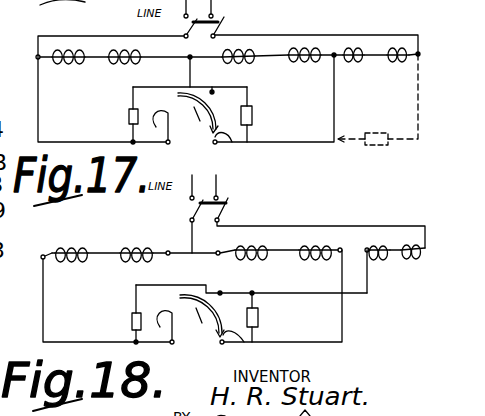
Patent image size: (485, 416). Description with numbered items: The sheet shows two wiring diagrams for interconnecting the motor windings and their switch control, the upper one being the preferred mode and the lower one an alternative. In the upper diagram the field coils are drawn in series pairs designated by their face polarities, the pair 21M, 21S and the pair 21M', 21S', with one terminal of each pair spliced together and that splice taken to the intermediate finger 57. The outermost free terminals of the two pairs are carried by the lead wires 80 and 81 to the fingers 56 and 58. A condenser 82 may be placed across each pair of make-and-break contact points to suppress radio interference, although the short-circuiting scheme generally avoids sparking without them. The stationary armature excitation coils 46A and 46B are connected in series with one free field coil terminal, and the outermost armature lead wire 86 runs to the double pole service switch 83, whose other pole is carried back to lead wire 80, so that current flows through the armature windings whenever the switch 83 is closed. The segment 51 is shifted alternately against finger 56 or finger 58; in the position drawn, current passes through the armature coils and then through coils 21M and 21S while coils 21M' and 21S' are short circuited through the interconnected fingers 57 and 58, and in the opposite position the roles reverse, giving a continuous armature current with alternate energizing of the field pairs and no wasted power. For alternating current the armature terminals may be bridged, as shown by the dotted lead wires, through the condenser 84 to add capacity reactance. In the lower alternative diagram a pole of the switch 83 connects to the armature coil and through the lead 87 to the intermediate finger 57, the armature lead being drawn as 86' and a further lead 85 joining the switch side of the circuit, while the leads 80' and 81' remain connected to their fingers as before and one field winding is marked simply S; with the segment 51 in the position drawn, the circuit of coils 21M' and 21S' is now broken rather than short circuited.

In FIG. 17, the double pole service switch 83 is at (224, 28).
In FIG. 18, the double pole service switch 83 is at (229, 206).
In FIG. 17, the lead wire 80 is at (110, 89).
In FIG. 17, the outermost armature lead wire 86 is at (316, 32).
In FIG. 17, the field coil 21M is at (68, 66).
In FIG. 18, the field coil 21M is at (249, 261).
In FIG. 17, the field coil 21S is at (124, 67).
In FIG. 17, the field coil 21M' is at (237, 66).
In FIG. 18, the field coil 21M' is at (70, 266).
In FIG. 17, the field coil 21S' is at (301, 65).
In FIG. 18, the field coil 21S' is at (135, 265).
In FIG. 17, the stationary armature excitation coil 46A is at (357, 63).
In FIG. 18, the stationary armature excitation coil 46A is at (378, 261).
In FIG. 17, the stationary armature excitation coil 46B is at (404, 63).
In FIG. 18, the stationary armature excitation coil 46B is at (414, 260).
In FIG. 17, the condenser 84 is at (378, 146).
In FIG. 17, the lead wire 81 is at (275, 111).
In FIG. 17, the condenser 82 is at (129, 113).
In FIG. 18, the condenser 82 is at (132, 315).
In FIG. 17, the intermediate finger 57 is at (211, 90).
In FIG. 18, the intermediate finger 57 is at (219, 291).
In FIG. 17, the segment 51 is at (198, 114).
In FIG. 18, the segment 51 is at (202, 317).
In FIG. 17, the finger 56 is at (180, 98).
In FIG. 18, the finger 56 is at (173, 344).
In FIG. 17, the finger 58 is at (234, 150).
In FIG. 18, the finger 58 is at (246, 348).
In FIG. 18, the conductor 85 is at (191, 239).
In FIG. 18, the supply conductor 86' is at (321, 223).
In FIG. 18, the lead 80' is at (105, 298).
In FIG. 18, the starting winding S is at (315, 262).
In FIG. 18, the lead 81' is at (303, 304).
In FIG. 18, the lead 87 is at (365, 295).